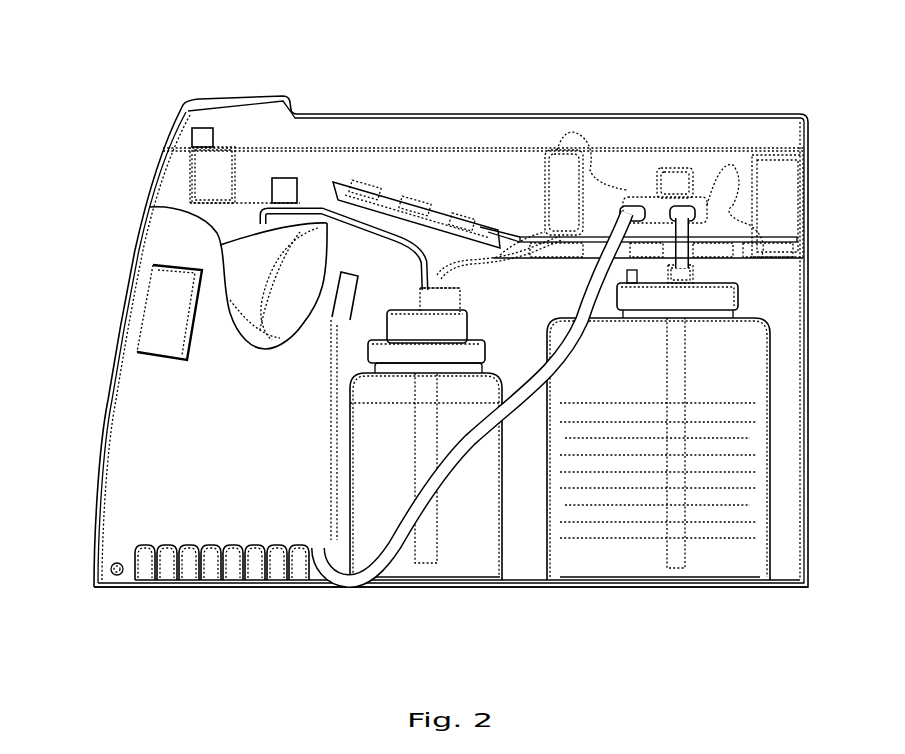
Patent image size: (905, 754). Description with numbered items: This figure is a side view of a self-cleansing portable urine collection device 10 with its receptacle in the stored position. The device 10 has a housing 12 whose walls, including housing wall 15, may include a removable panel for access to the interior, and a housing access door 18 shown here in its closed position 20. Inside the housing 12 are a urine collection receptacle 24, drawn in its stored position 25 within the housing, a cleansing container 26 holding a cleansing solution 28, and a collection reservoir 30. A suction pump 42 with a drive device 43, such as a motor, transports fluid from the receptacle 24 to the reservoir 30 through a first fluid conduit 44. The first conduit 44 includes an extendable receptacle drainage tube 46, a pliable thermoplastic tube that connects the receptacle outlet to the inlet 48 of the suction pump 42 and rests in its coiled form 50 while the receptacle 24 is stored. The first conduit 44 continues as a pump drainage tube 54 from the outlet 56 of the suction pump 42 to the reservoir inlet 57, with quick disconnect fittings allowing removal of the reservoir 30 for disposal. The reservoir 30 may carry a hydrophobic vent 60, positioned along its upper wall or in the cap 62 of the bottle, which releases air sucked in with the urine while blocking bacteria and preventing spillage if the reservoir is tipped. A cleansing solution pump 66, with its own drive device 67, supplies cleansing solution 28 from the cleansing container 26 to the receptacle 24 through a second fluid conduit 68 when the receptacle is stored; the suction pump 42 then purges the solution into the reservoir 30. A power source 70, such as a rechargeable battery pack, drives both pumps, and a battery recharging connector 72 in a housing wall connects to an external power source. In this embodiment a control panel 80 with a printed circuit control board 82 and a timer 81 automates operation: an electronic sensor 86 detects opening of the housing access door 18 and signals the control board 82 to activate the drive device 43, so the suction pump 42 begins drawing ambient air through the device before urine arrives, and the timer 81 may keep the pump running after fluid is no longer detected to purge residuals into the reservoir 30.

The urine collection device 10 is at (538, 50).
The housing 12 is at (247, 593).
The housing wall 15 is at (807, 540).
The housing access door 18 is at (143, 245).
The closed position 20 is at (169, 312).
The urine collection receptacle 24 is at (250, 263).
The stored position 25 is at (238, 278).
The cleansing container 26 is at (460, 540).
The cleansing solution 28 is at (370, 520).
The collection reservoir 30 is at (638, 543).
The suction pump 42 is at (662, 210).
The drive device 43 is at (672, 182).
The first fluid conduit 44 is at (610, 247).
The receptacle drainage tube 46 is at (168, 577).
The inlet 48 is at (625, 203).
The coiled form 50 is at (210, 562).
The pump drainage tube 54 is at (697, 200).
The outlet 56 is at (688, 213).
The reservoir inlet 57 is at (688, 272).
The vent 60 is at (627, 280).
The cap 62 is at (737, 297).
The cleansing solution pump 66 is at (417, 330).
The drive device 67 is at (430, 302).
The second fluid conduit 68 is at (402, 250).
The power source 70 is at (510, 247).
The battery recharging connector 72 is at (810, 190).
The control panel 80 is at (253, 203).
The timer 81 is at (283, 178).
The printed circuit control board 82 is at (393, 200).
The electronic sensor 86 is at (203, 138).